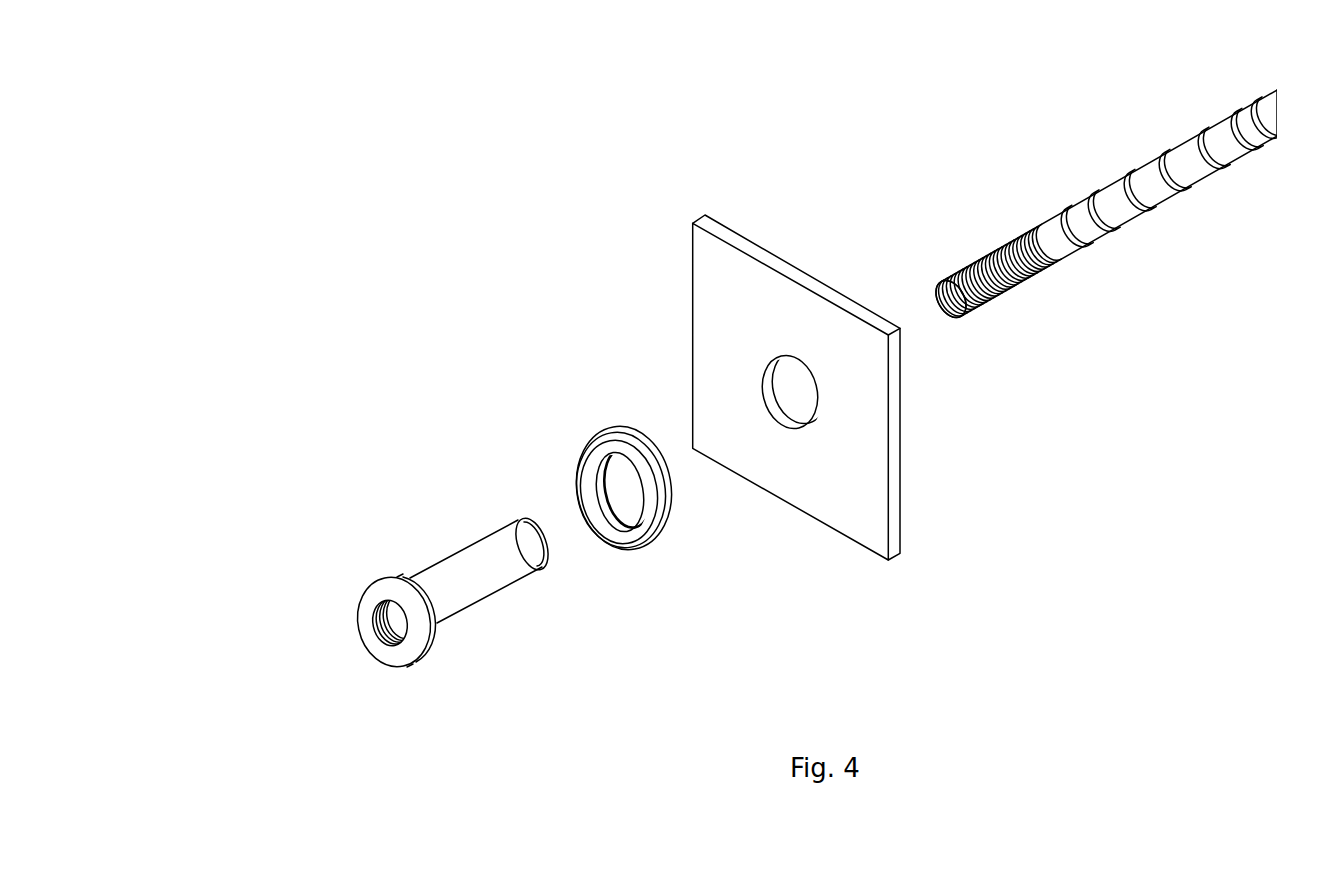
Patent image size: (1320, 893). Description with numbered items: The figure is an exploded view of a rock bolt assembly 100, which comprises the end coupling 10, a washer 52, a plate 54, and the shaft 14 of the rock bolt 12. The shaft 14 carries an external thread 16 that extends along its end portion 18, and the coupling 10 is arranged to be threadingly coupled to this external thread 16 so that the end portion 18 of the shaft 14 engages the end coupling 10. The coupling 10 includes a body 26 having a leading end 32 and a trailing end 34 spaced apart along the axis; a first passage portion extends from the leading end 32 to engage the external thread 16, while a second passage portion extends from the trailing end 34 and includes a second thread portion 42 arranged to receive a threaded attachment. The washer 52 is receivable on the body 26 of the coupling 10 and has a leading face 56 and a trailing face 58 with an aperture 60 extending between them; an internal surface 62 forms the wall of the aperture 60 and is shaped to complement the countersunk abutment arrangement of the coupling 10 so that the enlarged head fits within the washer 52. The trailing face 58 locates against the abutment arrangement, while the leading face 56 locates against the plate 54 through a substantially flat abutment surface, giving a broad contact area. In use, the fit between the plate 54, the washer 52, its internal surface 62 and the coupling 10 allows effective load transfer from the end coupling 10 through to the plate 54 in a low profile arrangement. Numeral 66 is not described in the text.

The rock bolt assembly 100 is at (612, 158).
The end coupling 10 is at (389, 573).
The rock bolt 12 is at (1073, 280).
The shaft 14 is at (1147, 202).
The external thread 16 is at (1013, 287).
The end portion 18 is at (955, 268).
The body 26 is at (468, 567).
The leading end 32 is at (530, 523).
The trailing end 34 is at (410, 595).
The second thread portion 42 is at (390, 632).
The washer 52 is at (621, 502).
The plate 54 is at (875, 522).
The leading face 56 is at (607, 507).
The trailing face 58 is at (577, 487).
The aperture 60 is at (633, 508).
The internal surface 62 is at (613, 523).
The washer rim 66 is at (580, 452).